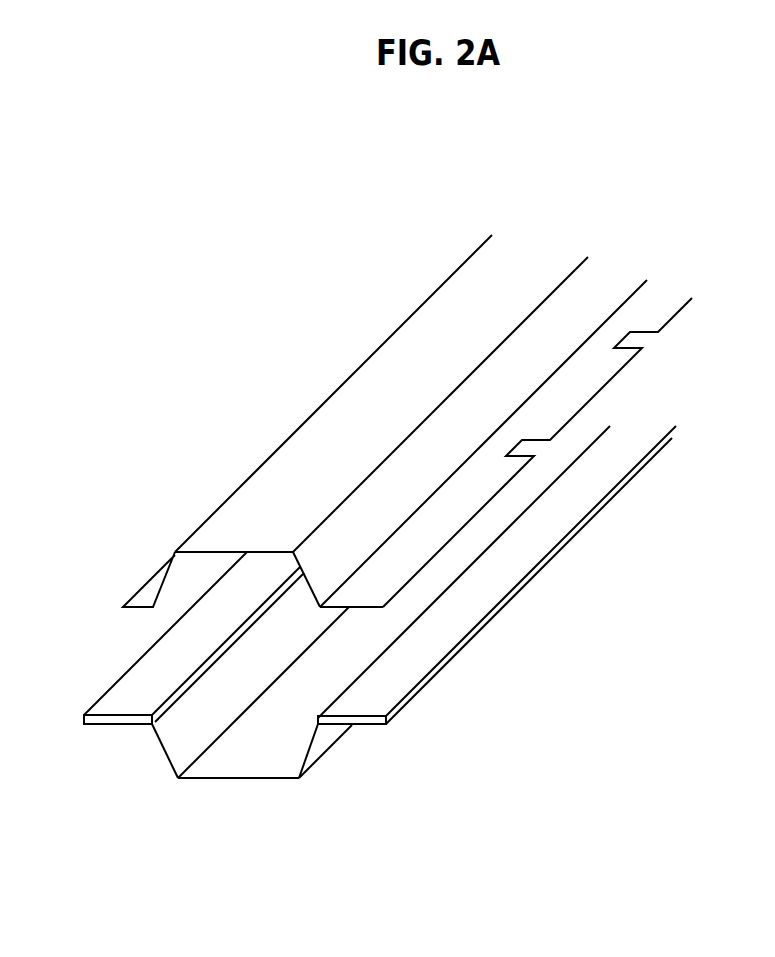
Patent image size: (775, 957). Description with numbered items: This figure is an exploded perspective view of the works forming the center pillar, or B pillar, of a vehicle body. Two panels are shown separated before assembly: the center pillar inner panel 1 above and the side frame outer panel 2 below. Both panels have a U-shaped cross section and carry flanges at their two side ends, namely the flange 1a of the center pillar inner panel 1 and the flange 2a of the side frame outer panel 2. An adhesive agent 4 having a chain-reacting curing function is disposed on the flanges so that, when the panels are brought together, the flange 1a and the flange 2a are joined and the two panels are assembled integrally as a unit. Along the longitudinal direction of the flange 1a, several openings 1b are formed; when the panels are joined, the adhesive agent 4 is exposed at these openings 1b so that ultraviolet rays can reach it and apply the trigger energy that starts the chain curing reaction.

The center pillar inner panel 1 is at (407, 421).
The flange 1a is at (422, 535).
The opening 1b is at (526, 458).
The side frame outer panel 2 is at (380, 656).
The flange 2a is at (428, 683).
The adhesive agent 4 is at (157, 673).